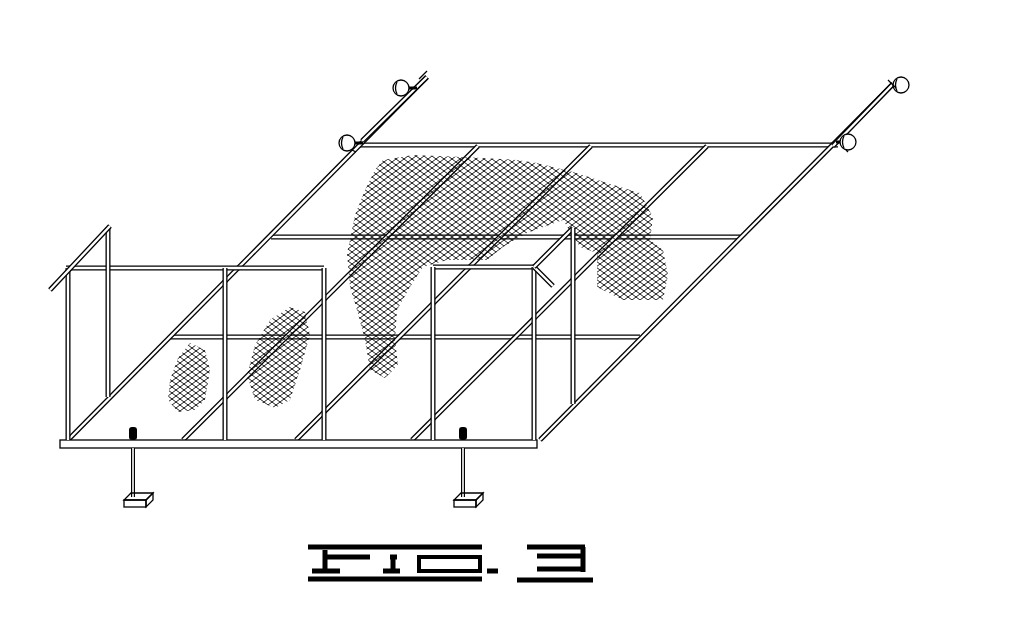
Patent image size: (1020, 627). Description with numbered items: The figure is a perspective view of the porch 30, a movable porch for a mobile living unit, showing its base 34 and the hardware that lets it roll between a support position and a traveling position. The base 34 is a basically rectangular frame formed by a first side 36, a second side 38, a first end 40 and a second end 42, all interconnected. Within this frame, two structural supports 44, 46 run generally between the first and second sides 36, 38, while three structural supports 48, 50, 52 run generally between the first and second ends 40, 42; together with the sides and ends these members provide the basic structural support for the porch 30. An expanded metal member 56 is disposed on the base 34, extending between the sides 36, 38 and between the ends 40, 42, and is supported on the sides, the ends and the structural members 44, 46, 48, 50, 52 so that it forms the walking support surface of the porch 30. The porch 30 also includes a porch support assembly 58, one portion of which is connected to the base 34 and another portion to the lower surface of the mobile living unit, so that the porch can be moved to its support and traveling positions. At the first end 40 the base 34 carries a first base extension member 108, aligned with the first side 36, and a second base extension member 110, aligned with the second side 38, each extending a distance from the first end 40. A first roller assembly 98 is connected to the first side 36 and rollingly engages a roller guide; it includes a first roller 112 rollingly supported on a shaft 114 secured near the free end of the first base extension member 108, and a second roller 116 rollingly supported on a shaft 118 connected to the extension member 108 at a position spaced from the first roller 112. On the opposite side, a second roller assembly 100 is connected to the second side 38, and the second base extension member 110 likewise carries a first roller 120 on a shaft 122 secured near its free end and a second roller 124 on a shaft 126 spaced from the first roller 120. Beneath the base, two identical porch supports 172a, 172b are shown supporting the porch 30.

The porch 30 is at (476, 287).
The base 34 is at (476, 287).
The first side 36 is at (700, 280).
The second side 38 is at (272, 241).
The first end 40 is at (543, 145).
The second end 42 is at (340, 451).
The structural support 44 is at (681, 235).
The structural support 46 is at (610, 331).
The structural support 48 is at (468, 152).
The structural support 50 is at (585, 147).
The structural support 52 is at (684, 152).
The expanded metal member 56 is at (380, 200).
The porch support assembly 58 is at (386, 68).
The first roller assembly 98 is at (841, 126).
The second roller assembly 100 is at (383, 80).
The first base extension member 108 is at (866, 98).
The second base extension member 110 is at (428, 80).
The first roller 112 is at (901, 77).
The shaft 114 is at (890, 78).
The second roller 116 is at (849, 152).
The shaft 118 is at (836, 140).
The first roller 120 is at (408, 80).
The shaft 122 is at (406, 80).
The second roller 124 is at (340, 144).
The shaft 126 is at (348, 134).
The porch support 172a is at (148, 473).
The porch support 172b is at (448, 472).